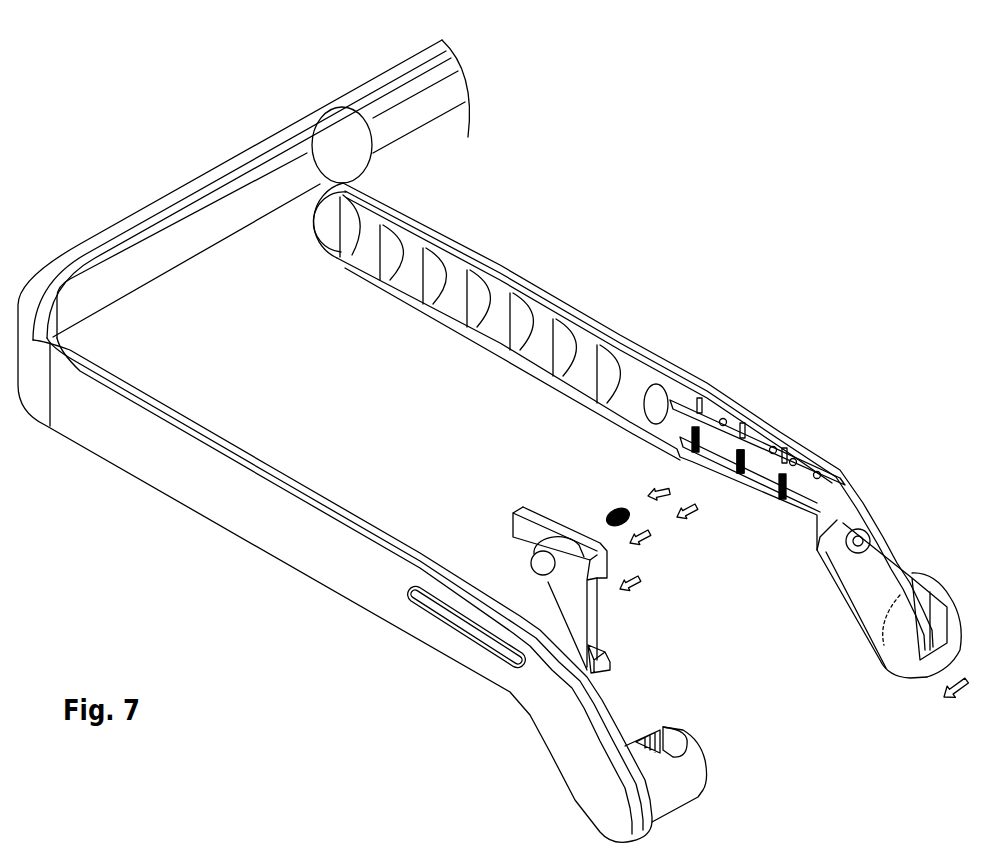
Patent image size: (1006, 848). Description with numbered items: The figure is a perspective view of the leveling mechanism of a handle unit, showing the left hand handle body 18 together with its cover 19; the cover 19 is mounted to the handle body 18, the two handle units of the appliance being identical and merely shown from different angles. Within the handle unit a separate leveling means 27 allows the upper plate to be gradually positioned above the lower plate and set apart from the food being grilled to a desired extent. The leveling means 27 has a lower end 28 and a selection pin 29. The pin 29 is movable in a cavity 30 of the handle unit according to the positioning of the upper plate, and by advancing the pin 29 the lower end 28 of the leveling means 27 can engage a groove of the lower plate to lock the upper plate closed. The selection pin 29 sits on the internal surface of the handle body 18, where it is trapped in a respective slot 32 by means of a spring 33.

The handle body 18 is at (557, 296).
The cover 19 is at (273, 532).
The leveling means 27 is at (522, 506).
The lower end 28 is at (610, 658).
The selection pin 29 is at (537, 556).
The cavity 30 is at (447, 627).
The slot 32 is at (756, 462).
The spring 33 is at (608, 510).